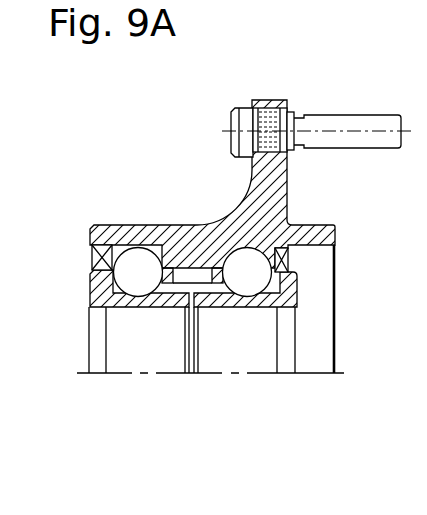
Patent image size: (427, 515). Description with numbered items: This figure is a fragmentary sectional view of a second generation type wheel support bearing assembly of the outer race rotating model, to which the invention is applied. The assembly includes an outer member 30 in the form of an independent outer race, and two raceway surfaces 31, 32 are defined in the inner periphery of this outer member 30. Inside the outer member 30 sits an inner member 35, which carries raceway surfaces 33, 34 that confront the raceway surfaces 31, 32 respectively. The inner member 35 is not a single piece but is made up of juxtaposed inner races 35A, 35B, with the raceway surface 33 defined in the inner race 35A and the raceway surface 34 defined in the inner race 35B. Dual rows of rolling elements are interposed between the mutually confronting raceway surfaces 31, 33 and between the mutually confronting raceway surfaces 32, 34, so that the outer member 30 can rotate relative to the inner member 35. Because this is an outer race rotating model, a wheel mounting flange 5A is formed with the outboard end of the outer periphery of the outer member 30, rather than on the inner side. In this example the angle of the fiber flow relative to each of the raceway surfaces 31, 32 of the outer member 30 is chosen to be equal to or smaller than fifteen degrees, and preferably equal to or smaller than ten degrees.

The wheel mounting flange 5A is at (271, 107).
The outer member 30 is at (180, 223).
The raceway surface 31 is at (241, 263).
The raceway surface 32 is at (128, 250).
The raceway surface 33 is at (259, 282).
The raceway surface 34 is at (100, 298).
The inner member 35 is at (193, 378).
The inner race 35A is at (247, 310).
The inner race 35B is at (173, 305).